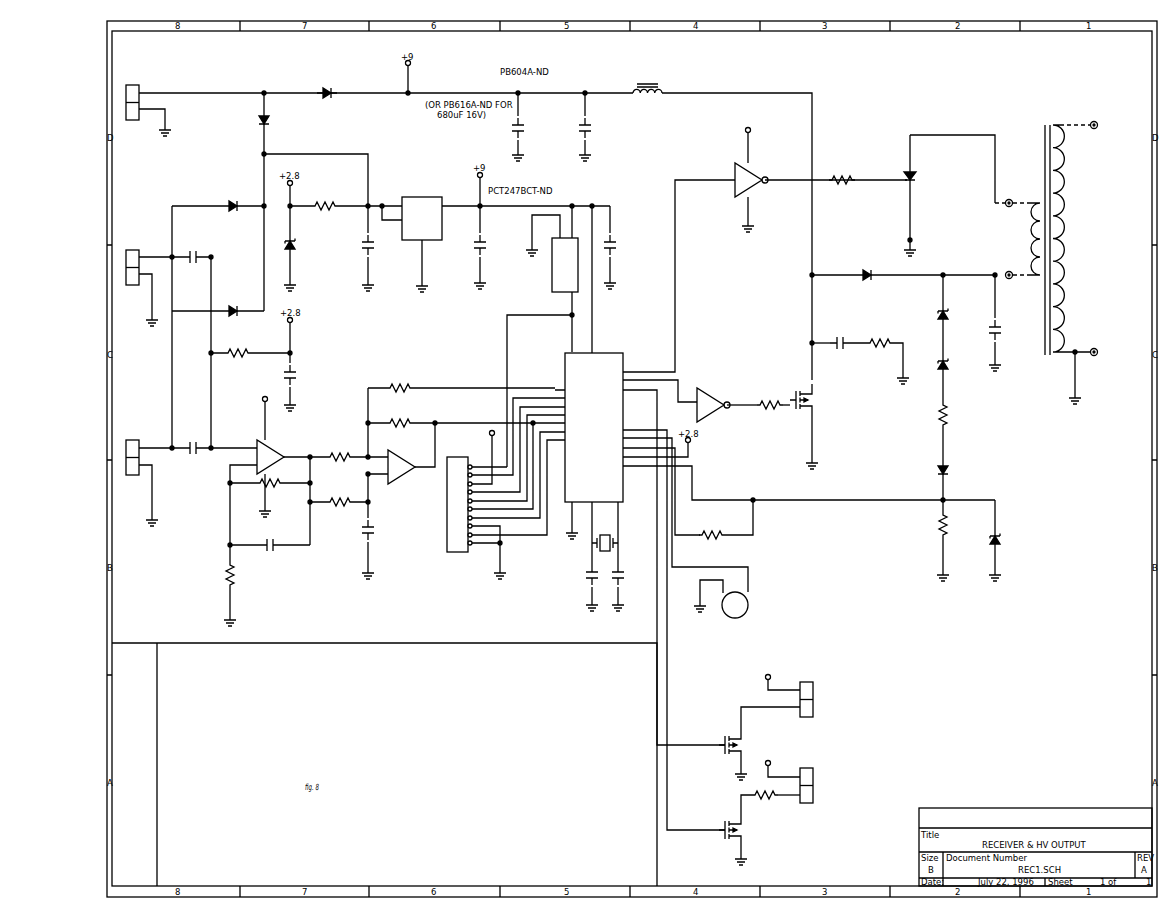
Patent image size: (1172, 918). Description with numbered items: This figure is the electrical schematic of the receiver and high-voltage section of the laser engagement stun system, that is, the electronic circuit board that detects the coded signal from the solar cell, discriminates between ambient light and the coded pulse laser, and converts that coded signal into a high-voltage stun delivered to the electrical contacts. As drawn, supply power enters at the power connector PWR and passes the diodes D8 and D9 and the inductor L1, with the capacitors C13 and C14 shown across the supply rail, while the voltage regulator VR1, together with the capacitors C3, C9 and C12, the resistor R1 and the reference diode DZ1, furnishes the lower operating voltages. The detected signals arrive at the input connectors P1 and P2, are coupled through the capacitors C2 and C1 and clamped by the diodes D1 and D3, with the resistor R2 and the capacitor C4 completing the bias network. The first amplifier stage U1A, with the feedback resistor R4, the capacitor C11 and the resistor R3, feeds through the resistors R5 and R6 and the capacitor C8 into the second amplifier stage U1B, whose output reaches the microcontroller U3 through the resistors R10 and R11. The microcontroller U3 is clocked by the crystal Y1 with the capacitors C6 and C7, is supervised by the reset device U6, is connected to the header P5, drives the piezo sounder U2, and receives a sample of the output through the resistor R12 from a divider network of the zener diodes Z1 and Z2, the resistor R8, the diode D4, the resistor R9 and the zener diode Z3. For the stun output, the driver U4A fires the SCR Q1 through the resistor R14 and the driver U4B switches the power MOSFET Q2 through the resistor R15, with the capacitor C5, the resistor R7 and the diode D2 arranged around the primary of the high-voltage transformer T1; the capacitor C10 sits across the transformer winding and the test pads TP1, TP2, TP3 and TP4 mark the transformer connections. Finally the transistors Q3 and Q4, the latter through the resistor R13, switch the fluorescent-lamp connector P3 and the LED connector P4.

The power connector PWR is at (151, 102).
The diode D8 is at (330, 91).
The diode D9 is at (284, 123).
The inductor L1 is at (649, 90).
The capacitor C13 is at (535, 127).
The capacitor C14 is at (596, 127).
The diode D1 is at (218, 199).
The diode D3 is at (218, 295).
The input connector 1 P1 is at (145, 271).
The capacitor C2 is at (191, 256).
The resistor R2 is at (250, 352).
The capacitor C4 is at (298, 382).
The input connector 2 P2 is at (145, 466).
The capacitor C1 is at (214, 448).
The op amp U1A is at (268, 466).
The resistor R4 is at (270, 481).
The capacitor C11 is at (270, 542).
The resistor R3 is at (240, 585).
The resistor R5 is at (339, 456).
The resistor R6 is at (339, 501).
The capacitor C8 is at (376, 549).
The op amp U1B is at (401, 463).
The resistor R10 is at (461, 378).
The resistor R11 is at (461, 413).
The resistor R1 is at (346, 205).
The voltage reference DZ1 is at (321, 248).
The capacitor C3 is at (375, 248).
The voltage regulator VR1 is at (431, 233).
The capacitor C9 is at (492, 247).
The capacitor C12 is at (620, 247).
The reset supervisor U6 is at (549, 279).
The microcontroller U3 is at (600, 436).
The crystal Y1 is at (624, 550).
The capacitor C6 is at (579, 588).
The capacitor C7 is at (631, 588).
The header P5 is at (482, 502).
The MOSFET driver U4A is at (808, 175).
The resistor R14 is at (842, 176).
The SCR Q1 is at (945, 195).
The test pad TP3 is at (1009, 218).
The diode D2 is at (903, 277).
The test pad TP4 is at (1015, 284).
The HV transformer T1 is at (1064, 223).
The test pad TP1 is at (1097, 138).
The test pad TP2 is at (1094, 377).
The capacitor C5 is at (832, 342).
The resistor R7 is at (879, 352).
The MOSFET driver U4B is at (723, 389).
The resistor R15 is at (773, 403).
The power MOSFET Q2 is at (818, 426).
The zener diode Z1 is at (957, 300).
The zener diode Z2 is at (957, 363).
The resistor R8 is at (958, 430).
The diode D4 is at (960, 477).
The resistor R9 is at (957, 540).
The zener diode Z3 is at (1007, 540).
The capacitor C10 is at (1005, 323).
The resistor R12 is at (726, 526).
The piezo buzzer U2 is at (724, 617).
The NFET Q3 is at (759, 743).
The fluorescent lamp connector P3 is at (809, 697).
The NFET Q4 is at (728, 825).
The resistor R13 is at (776, 808).
The LED connector P4 is at (803, 784).